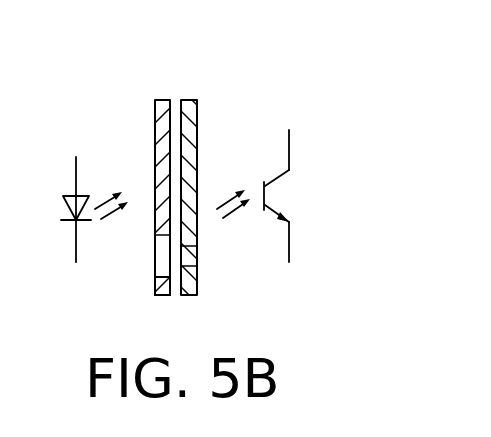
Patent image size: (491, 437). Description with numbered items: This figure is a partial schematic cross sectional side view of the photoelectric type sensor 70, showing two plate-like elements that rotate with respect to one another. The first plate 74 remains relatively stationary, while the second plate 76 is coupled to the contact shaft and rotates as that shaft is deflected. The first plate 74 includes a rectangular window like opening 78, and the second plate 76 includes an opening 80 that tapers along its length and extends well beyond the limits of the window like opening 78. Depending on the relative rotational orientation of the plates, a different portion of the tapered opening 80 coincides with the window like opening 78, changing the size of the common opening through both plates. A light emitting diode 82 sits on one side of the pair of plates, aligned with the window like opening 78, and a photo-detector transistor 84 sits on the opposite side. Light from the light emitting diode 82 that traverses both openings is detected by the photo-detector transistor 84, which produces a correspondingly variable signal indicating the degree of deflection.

The photoelectric type sensor 70 is at (200, 70).
The first plate 74 is at (155, 106).
The second plate 76 is at (197, 111).
The window like opening 78 is at (157, 270).
The opening 80 is at (197, 263).
The light emitting diode 82 is at (62, 200).
The photo-detector transistor 84 is at (270, 210).